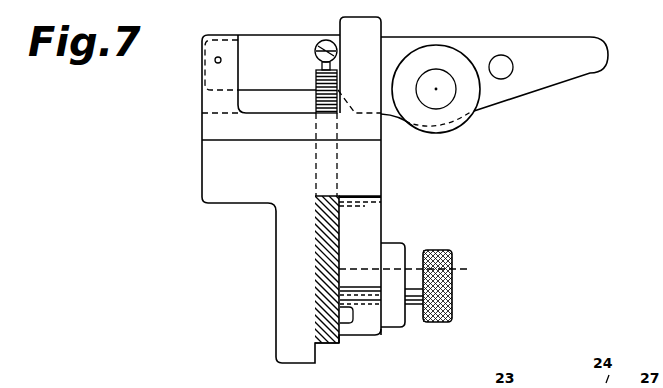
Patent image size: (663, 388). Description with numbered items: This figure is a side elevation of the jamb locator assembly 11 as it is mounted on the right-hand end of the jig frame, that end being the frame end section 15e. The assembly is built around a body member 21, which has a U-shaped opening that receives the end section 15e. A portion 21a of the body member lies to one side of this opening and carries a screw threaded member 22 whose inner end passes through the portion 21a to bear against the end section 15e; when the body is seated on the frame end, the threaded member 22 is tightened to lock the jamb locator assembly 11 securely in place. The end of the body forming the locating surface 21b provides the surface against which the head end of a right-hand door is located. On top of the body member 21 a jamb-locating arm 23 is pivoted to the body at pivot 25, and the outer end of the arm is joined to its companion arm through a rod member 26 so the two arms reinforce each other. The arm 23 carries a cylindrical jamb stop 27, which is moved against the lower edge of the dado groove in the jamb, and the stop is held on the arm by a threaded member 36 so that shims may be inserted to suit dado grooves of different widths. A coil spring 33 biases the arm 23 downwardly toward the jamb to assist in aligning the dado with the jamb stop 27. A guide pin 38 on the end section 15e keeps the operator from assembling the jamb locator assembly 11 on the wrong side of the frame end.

The jamb locator assembly 11 is at (290, 19).
The body member 21 is at (210, 190).
The portion of body member 21a is at (372, 228).
The locating surface 21b is at (208, 130).
The screw threaded member 22 is at (452, 277).
The jamb-locating arm 23 is at (398, 43).
The pivot 25 is at (214, 61).
The rod member 26 is at (510, 59).
The cylindrical jamb stop 27 is at (470, 103).
The coil spring 33 is at (316, 95).
The threaded member 36 is at (442, 104).
The guide pin 38 is at (350, 314).
The frame end section 15e is at (327, 347).